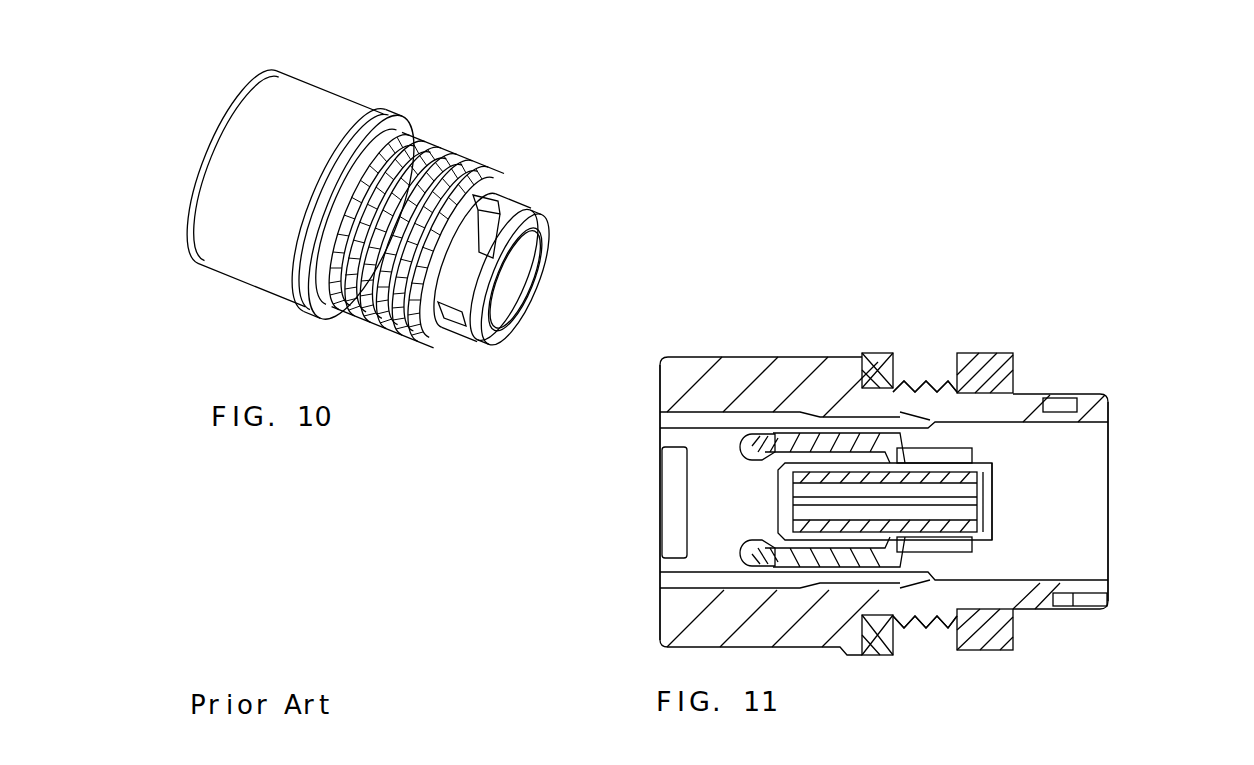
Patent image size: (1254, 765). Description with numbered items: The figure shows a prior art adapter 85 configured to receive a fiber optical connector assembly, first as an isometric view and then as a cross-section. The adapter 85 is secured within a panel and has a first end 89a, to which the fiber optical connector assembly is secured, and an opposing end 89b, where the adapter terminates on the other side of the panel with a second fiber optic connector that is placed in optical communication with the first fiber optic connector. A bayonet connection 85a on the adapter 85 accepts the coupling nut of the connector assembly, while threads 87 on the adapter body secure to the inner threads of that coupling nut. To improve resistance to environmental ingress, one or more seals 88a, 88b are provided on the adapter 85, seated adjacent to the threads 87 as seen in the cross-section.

In FIG. 10, the adapter 85 is at (226, 55).
In FIG. 11, the adapter 85 is at (714, 299).
In FIG. 10, the bayonet connection 85a is at (493, 203).
In FIG. 10, the threads 87 is at (421, 150).
In FIG. 11, the threads 87 is at (927, 637).
In FIG. 11, the seal 88a is at (877, 360).
In FIG. 11, the seal 88b is at (992, 368).
In FIG. 11, the first end 89a is at (1127, 470).
In FIG. 11, the opposing end 89b is at (642, 490).